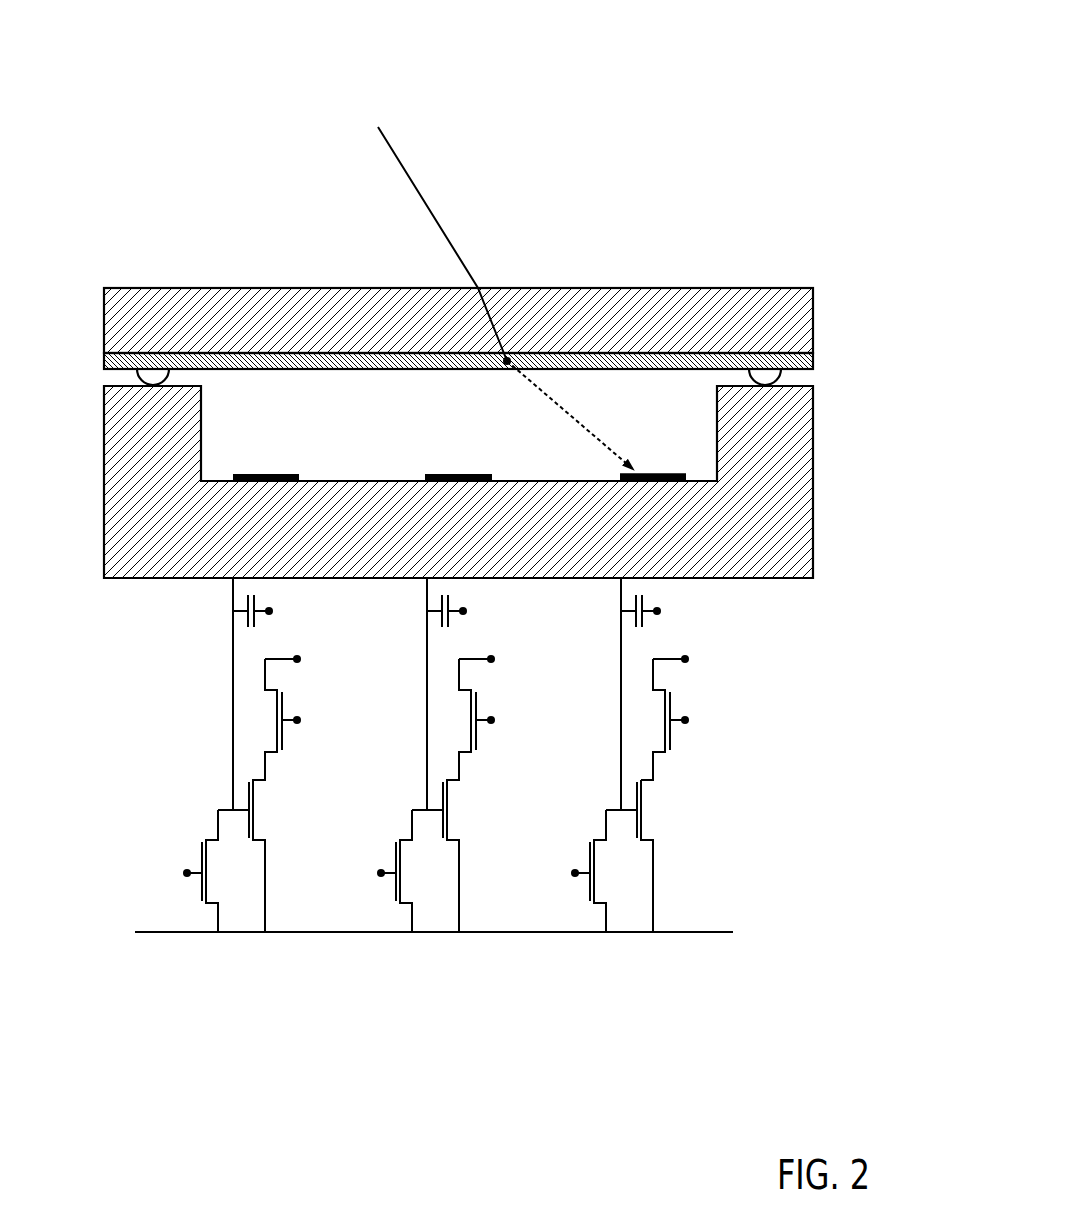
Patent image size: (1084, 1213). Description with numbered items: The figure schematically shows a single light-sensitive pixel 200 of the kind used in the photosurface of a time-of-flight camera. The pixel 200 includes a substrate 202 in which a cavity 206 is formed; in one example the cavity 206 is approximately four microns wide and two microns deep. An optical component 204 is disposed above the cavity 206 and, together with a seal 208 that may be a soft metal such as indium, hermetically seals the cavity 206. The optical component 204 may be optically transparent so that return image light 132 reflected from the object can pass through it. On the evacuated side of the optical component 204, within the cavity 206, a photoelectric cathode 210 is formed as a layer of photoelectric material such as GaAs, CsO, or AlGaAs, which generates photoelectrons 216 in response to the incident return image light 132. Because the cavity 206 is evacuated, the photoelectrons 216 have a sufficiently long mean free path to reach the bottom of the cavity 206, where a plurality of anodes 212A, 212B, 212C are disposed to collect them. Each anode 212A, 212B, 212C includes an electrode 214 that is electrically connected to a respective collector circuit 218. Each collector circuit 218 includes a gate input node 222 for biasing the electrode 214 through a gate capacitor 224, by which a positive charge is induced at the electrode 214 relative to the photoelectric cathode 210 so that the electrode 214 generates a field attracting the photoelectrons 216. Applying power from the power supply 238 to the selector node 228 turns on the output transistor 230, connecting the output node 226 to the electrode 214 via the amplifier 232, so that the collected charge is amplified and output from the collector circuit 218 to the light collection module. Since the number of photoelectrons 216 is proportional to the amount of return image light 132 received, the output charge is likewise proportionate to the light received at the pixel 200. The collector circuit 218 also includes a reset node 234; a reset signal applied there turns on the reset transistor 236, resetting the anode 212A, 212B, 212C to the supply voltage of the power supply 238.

The light-sensitive pixel 200 is at (653, 61).
The return image light 132 is at (438, 166).
The substrate 202 is at (814, 555).
The optical component 204 is at (814, 321).
The cavity 206 is at (378, 399).
The seal 208 is at (817, 376).
The photoelectric cathode 210 is at (814, 362).
The anode 212A is at (270, 454).
The anode 212B is at (464, 454).
The anode 212C is at (649, 454).
The electrode 214 is at (669, 472).
The photoelectrons 216 is at (541, 399).
The collector circuit 218 is at (439, 755).
The gate input node 222 is at (659, 609).
The gate capacitor 224 is at (652, 625).
The output node 226 is at (687, 661).
The selector node 228 is at (687, 721).
The output transistor 230 is at (672, 749).
The amplifier 232 is at (660, 811).
The reset node 234 is at (572, 871).
The reset transistor 236 is at (586, 892).
The power supply 238 is at (685, 935).